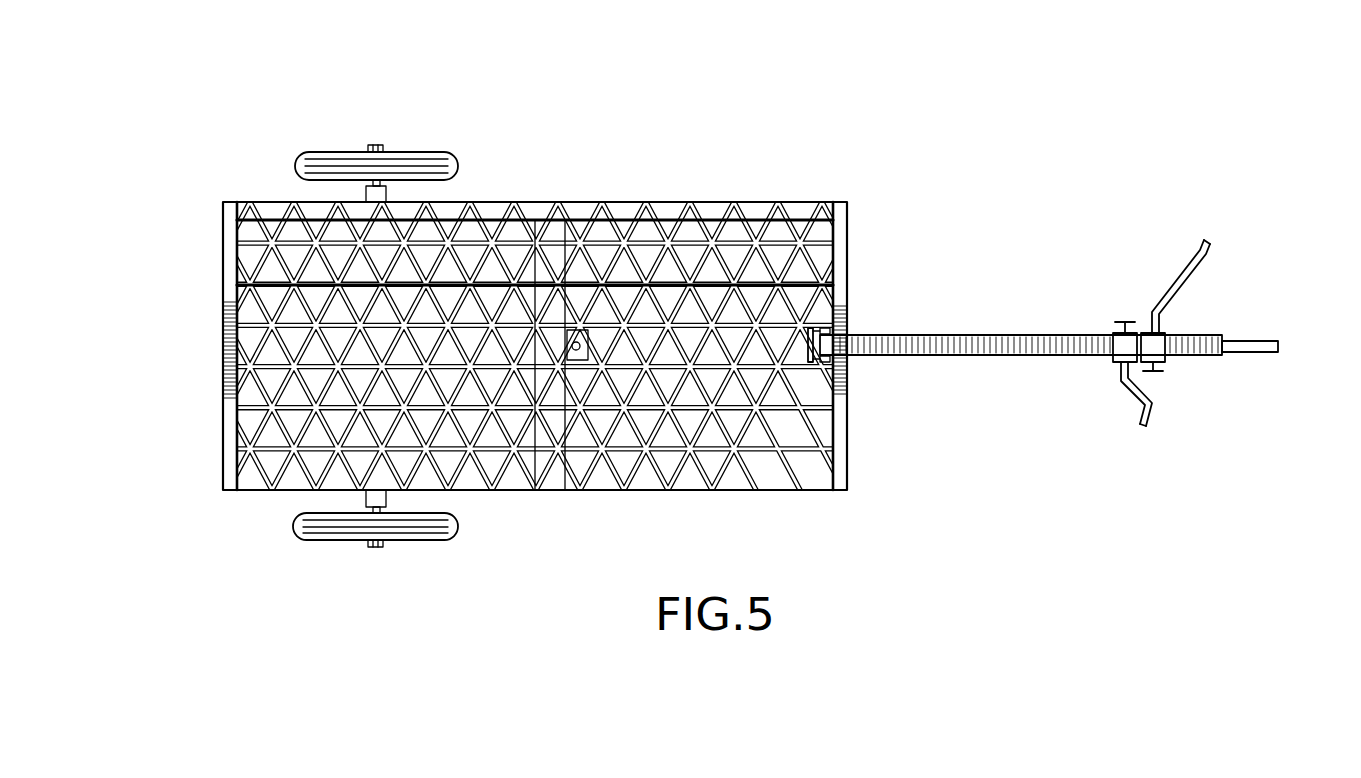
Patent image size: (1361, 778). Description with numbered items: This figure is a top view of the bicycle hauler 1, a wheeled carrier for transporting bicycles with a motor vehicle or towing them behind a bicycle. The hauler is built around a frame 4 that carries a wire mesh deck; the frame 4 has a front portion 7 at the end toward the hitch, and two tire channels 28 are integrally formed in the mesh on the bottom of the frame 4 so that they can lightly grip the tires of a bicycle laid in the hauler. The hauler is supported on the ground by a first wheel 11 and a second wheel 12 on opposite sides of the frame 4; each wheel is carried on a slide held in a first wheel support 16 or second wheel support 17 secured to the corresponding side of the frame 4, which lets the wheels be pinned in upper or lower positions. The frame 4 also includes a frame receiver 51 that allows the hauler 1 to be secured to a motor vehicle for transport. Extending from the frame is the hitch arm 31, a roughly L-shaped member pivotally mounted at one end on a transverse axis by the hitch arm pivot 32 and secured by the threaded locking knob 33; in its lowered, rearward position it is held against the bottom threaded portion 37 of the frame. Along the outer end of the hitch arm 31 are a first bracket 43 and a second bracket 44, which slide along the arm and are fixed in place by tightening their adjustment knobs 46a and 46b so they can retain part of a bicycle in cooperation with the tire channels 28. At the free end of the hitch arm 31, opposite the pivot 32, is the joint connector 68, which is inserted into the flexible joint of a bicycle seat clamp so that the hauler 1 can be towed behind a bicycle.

The bicycle hauler 1 is at (770, 117).
The frame 4 is at (622, 210).
The front portion 7 is at (849, 300).
The first wheel 11 is at (335, 152).
The second wheel 12 is at (453, 535).
The first wheel support 16 is at (388, 196).
The second wheel support 17 is at (366, 498).
The tire channel 28 is at (240, 266).
The hitch arm 31 is at (985, 334).
The hitch arm pivot 32 is at (830, 362).
The threaded locking knob 33 is at (807, 354).
The bottom threaded portion 37 is at (588, 350).
The first bracket 43 is at (1211, 248).
The second bracket 44 is at (1150, 421).
The adjustment knob 46a is at (1127, 321).
The adjustment knob 46b is at (1163, 371).
The frame receiver 51 is at (555, 462).
The joint connector 68 is at (1283, 342).